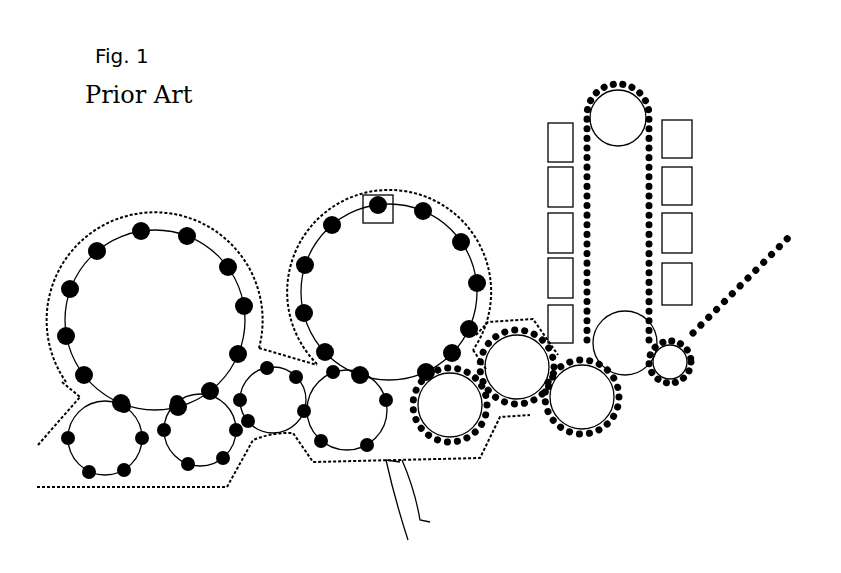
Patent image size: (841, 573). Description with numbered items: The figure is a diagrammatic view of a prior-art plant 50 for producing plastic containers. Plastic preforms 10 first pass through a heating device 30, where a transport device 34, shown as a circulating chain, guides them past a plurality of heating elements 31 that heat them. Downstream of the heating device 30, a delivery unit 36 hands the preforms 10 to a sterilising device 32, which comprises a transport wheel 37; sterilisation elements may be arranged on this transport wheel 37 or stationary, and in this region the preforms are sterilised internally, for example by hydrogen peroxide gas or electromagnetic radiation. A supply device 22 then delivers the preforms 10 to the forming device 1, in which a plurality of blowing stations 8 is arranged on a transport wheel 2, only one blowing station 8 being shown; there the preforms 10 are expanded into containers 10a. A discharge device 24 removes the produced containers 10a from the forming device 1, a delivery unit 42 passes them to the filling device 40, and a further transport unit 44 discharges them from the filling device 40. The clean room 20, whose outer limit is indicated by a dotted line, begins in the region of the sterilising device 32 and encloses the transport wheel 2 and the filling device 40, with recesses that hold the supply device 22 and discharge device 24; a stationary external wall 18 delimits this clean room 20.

The forming device 1 is at (371, 160).
The transport wheel 2 is at (440, 270).
The blowing station 8 is at (391, 196).
The wall 18 is at (443, 192).
The clean room 20 is at (318, 195).
The plant 50 is at (300, 92).
The filling device 40 is at (120, 252).
The delivery unit 42 is at (228, 433).
The transport unit 44 is at (87, 447).
The discharge device 24 is at (342, 440).
The supply device 22 is at (470, 418).
The transport wheel 37 is at (512, 390).
The delivery unit 36 is at (570, 412).
The heating device 30 is at (572, 80).
The heating element 31 is at (560, 140).
The sterilising device 32 is at (512, 293).
The transport device 34 is at (622, 110).
The plastic preform 10 is at (700, 336).
The container 10a is at (409, 516).